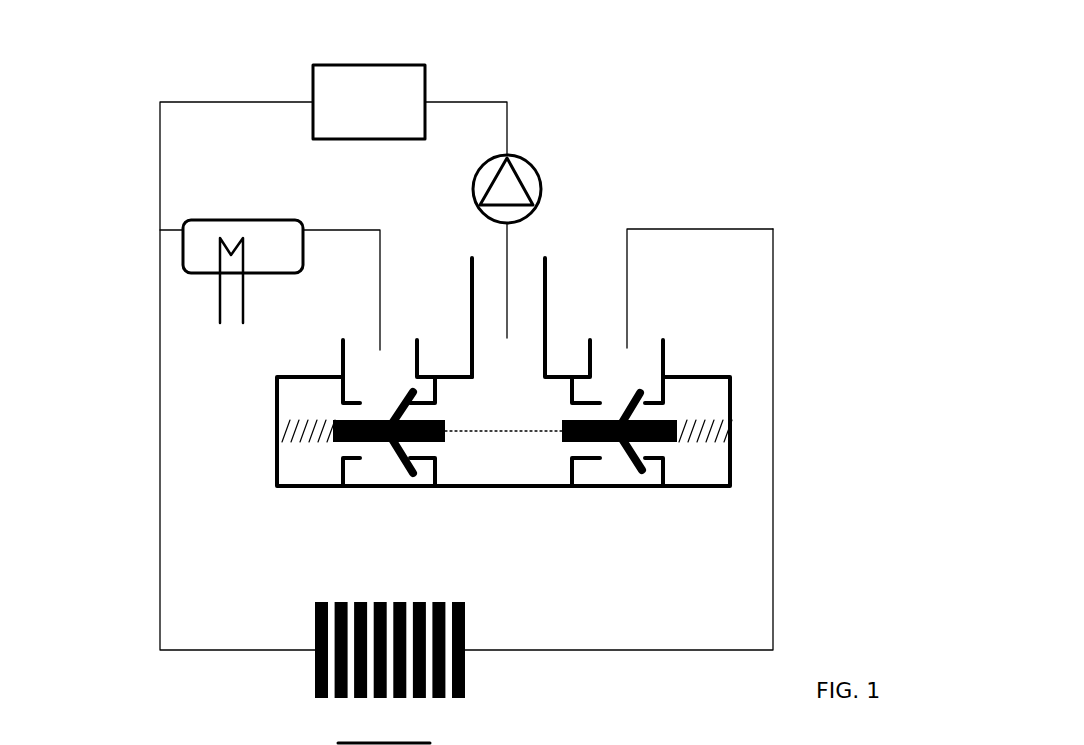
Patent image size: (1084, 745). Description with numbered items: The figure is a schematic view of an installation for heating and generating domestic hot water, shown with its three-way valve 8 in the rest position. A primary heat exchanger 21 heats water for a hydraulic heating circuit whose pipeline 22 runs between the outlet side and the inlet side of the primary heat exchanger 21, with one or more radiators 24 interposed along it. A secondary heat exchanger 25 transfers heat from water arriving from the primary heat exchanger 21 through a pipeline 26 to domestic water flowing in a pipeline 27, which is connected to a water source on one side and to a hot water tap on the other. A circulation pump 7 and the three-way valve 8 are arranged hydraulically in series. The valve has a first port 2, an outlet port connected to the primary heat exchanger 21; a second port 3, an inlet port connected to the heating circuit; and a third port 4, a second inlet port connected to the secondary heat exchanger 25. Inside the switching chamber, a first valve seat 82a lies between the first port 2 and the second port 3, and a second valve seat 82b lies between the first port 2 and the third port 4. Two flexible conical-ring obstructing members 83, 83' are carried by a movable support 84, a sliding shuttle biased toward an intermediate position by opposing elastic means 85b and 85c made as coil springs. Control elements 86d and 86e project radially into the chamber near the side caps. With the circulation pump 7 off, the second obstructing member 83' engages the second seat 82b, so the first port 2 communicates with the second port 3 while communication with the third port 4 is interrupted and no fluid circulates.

The first port 2 is at (549, 258).
The second port 3 is at (663, 340).
The third port 4 is at (342, 340).
The circulation pump 7 is at (535, 170).
The three-way valve 8 is at (676, 305).
The primary heat exchanger 21 is at (333, 65).
The pipeline 22 is at (160, 552).
The radiators 24 is at (465, 678).
The secondary heat exchanger 25 is at (262, 217).
The pipeline 26 is at (170, 230).
The pipeline 27 is at (218, 293).
The first valve seat 82a is at (602, 458).
The second valve seat 82b is at (437, 466).
The first obstructing member 83 is at (638, 499).
The second obstructing member 83' is at (377, 480).
The movable support 84 is at (497, 440).
The elastic means 85b is at (730, 431).
The elastic means 85c is at (277, 431).
The control element 86d is at (650, 462).
The control element 86e is at (355, 470).